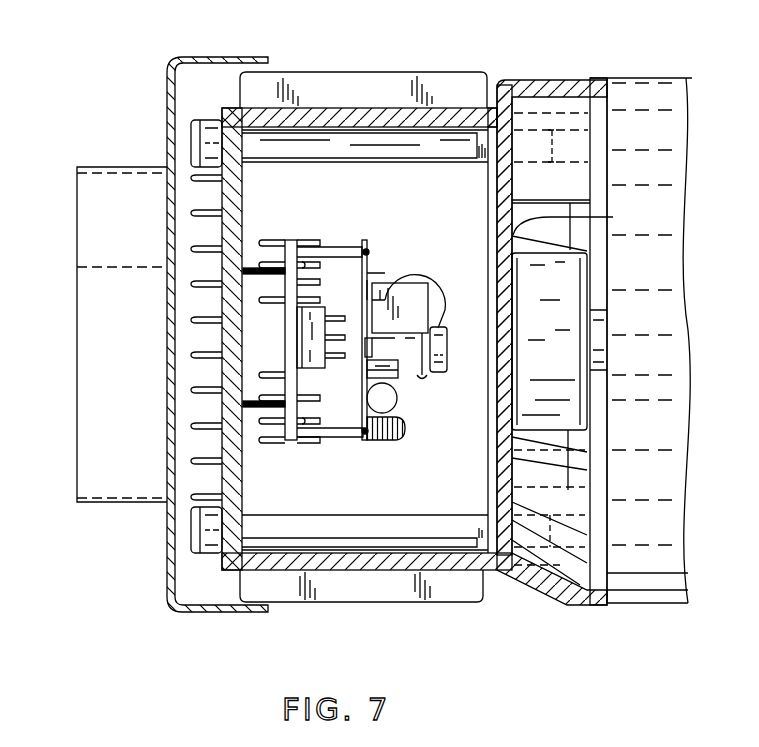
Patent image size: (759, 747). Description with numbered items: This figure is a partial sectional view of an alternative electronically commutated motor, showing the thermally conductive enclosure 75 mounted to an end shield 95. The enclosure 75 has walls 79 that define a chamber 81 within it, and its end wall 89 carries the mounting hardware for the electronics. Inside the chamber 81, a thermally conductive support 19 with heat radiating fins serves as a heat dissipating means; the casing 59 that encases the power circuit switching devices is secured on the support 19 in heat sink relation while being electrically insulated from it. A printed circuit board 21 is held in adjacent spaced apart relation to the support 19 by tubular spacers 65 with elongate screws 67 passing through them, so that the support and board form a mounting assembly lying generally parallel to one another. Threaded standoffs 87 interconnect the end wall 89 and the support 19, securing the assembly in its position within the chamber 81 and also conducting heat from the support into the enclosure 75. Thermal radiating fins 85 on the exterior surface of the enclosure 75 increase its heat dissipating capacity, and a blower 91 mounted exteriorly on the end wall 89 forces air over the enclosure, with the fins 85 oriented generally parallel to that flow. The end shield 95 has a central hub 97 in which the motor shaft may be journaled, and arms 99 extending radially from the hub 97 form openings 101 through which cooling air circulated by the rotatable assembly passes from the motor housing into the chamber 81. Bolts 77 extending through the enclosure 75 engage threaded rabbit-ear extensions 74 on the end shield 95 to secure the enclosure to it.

The support 19 is at (297, 447).
The printed circuit board 21 is at (366, 437).
The casing 59 is at (322, 322).
The spacers 65 is at (332, 247).
The screws 67 is at (369, 251).
The rabbit-ear extensions 74 is at (550, 113).
The enclosure 75 is at (424, 56).
The bolts 77 is at (204, 120).
The walls 79 is at (307, 84).
The chamber 81 is at (426, 226).
The thermal radiating fins 85 is at (174, 60).
The standoffs 87 is at (248, 268).
The end wall 89 is at (243, 180).
The blower 91 is at (70, 173).
The end shield 95 is at (534, 80).
The central hub 97 is at (577, 268).
The arms 99 is at (497, 483).
The openings 101 is at (583, 220).